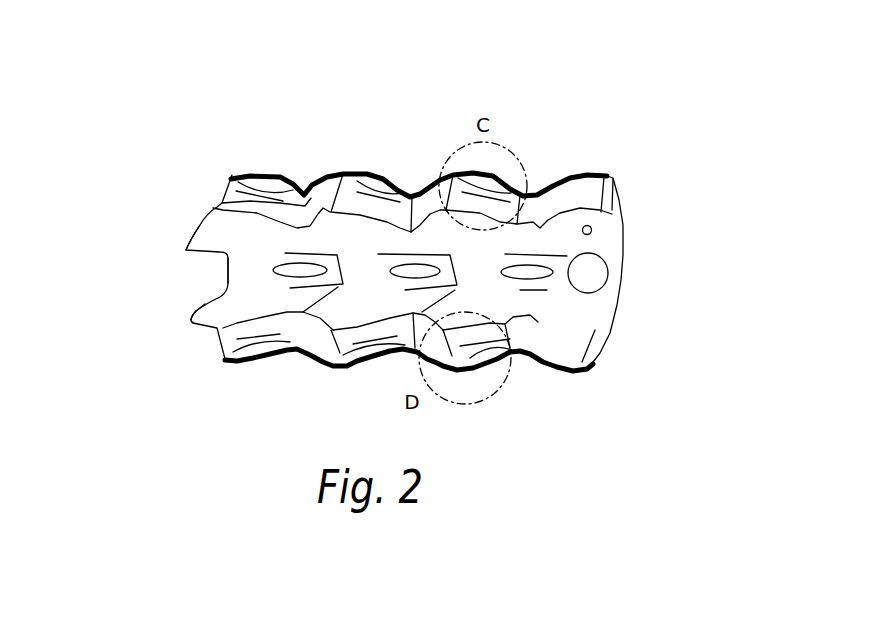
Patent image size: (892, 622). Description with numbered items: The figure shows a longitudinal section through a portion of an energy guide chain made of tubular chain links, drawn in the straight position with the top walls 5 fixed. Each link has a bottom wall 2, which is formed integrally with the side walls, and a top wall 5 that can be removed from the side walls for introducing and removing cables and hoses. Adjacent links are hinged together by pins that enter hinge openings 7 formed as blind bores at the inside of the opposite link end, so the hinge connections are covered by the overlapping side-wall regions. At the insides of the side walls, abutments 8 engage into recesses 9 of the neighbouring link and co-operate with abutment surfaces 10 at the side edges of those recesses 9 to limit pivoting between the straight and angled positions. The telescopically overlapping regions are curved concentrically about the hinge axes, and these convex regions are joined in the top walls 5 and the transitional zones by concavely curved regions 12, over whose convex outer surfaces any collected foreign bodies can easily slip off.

The bottom wall 2 is at (557, 363).
The top wall 5 is at (577, 172).
The hinge opening 7 is at (592, 274).
The abutment 8 is at (624, 379).
The recess 9 is at (200, 275).
The abutment surface 10 is at (197, 311).
The concavely curved region 12 is at (295, 346).